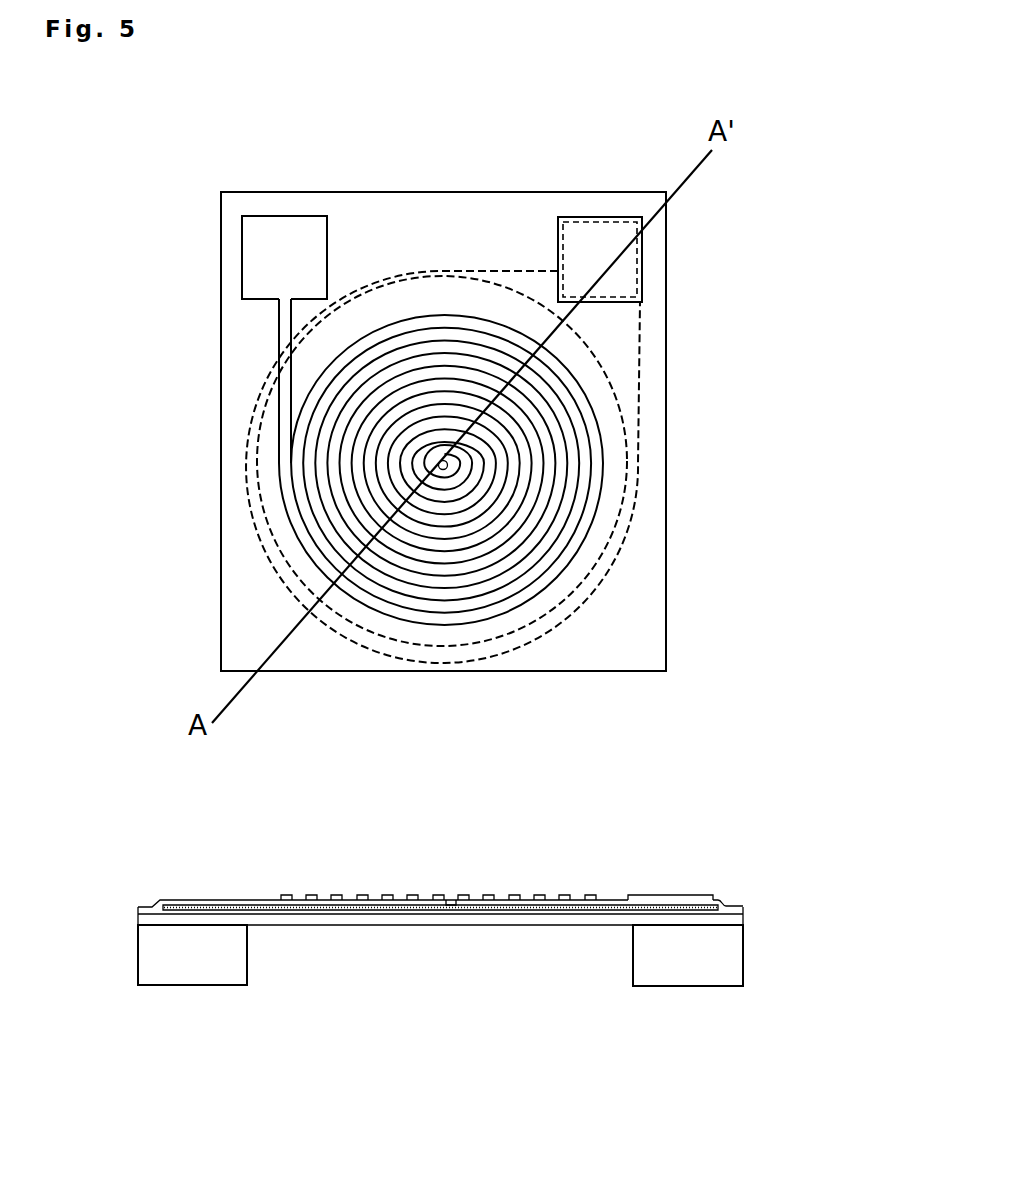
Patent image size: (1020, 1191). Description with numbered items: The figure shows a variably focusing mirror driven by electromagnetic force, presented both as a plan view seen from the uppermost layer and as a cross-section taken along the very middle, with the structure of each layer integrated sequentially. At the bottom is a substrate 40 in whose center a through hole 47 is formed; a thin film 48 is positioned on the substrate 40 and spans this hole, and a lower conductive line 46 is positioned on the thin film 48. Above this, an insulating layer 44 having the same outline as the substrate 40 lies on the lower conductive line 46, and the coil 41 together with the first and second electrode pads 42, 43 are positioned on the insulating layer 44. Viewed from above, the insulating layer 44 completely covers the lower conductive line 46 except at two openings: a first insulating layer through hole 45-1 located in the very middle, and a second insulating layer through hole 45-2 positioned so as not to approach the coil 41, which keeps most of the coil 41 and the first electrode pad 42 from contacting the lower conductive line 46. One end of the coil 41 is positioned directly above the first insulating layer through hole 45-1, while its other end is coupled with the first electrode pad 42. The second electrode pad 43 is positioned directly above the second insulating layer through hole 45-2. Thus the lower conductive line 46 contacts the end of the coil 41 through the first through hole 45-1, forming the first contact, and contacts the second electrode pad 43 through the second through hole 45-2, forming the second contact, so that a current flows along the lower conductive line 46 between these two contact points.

The substrate 40 is at (633, 631).
The coil 41 is at (288, 478).
The first electrode pad 42 is at (257, 252).
The second electrode pad 43 is at (625, 267).
The insulating layer 44 is at (137, 911).
The first insulating layer through hole 45-1 is at (462, 452).
The second insulating layer through hole 45-2 is at (590, 221).
The lower conductive line 46 is at (627, 527).
The through hole 47 is at (287, 565).
The thin film 48 is at (745, 914).